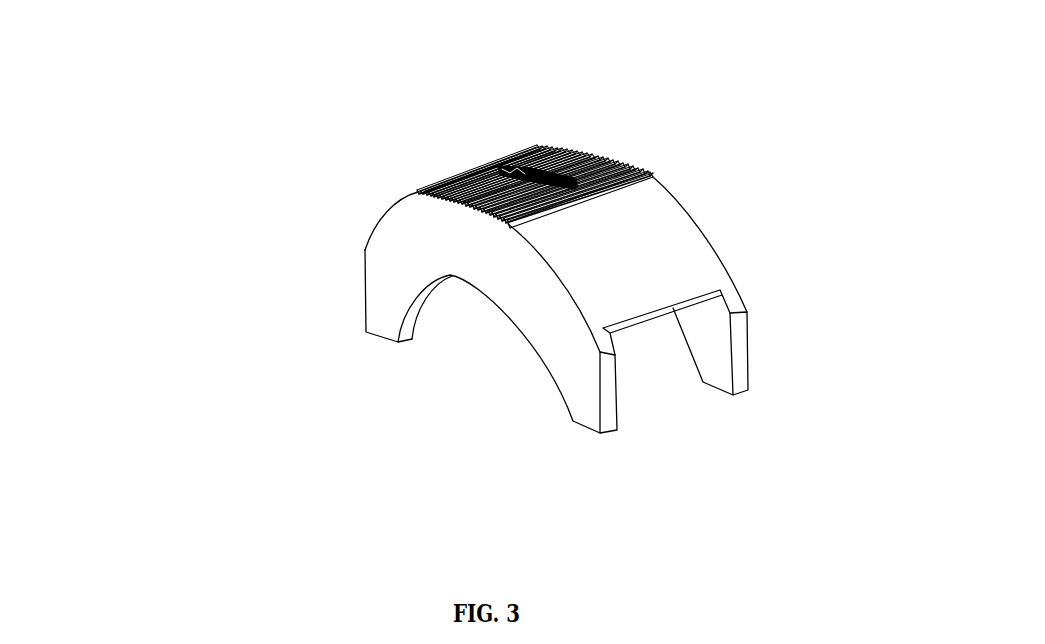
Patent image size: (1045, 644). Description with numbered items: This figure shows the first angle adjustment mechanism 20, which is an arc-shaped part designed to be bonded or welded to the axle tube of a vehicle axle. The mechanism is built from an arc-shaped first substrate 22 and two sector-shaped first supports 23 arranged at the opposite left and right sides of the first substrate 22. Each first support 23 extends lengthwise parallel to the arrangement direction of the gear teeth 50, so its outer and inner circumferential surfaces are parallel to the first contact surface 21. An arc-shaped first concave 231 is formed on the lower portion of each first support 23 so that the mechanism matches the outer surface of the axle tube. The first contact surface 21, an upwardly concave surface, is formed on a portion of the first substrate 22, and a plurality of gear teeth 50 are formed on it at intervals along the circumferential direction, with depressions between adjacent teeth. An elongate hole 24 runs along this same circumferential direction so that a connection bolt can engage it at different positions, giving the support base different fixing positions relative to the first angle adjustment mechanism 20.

The first angle adjustment mechanism 20 is at (183, 107).
The first contact surface 21 is at (689, 243).
The first substrate 22 is at (675, 309).
The first support 23 is at (390, 282).
The first concave 231 is at (463, 327).
The elongate hole 24 is at (528, 163).
The gear teeth 50 is at (647, 168).